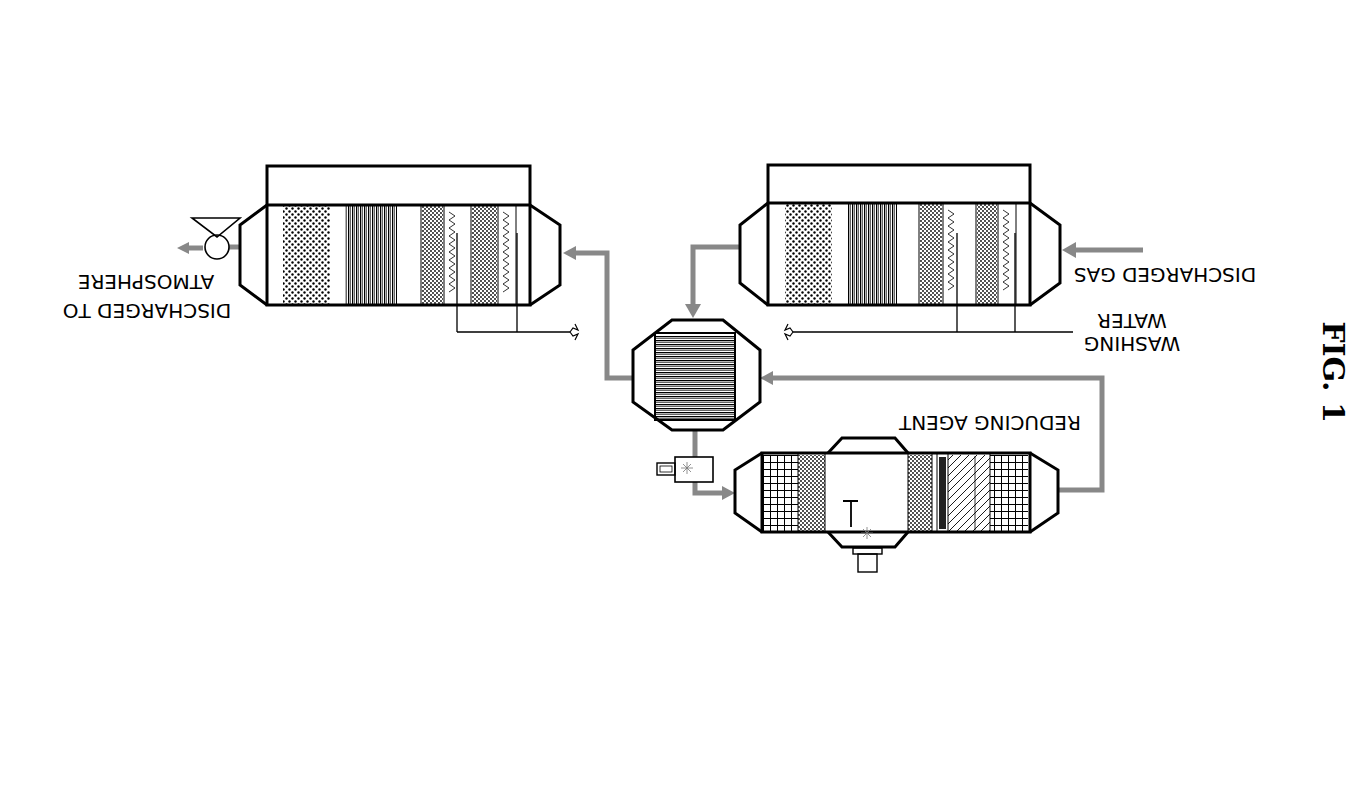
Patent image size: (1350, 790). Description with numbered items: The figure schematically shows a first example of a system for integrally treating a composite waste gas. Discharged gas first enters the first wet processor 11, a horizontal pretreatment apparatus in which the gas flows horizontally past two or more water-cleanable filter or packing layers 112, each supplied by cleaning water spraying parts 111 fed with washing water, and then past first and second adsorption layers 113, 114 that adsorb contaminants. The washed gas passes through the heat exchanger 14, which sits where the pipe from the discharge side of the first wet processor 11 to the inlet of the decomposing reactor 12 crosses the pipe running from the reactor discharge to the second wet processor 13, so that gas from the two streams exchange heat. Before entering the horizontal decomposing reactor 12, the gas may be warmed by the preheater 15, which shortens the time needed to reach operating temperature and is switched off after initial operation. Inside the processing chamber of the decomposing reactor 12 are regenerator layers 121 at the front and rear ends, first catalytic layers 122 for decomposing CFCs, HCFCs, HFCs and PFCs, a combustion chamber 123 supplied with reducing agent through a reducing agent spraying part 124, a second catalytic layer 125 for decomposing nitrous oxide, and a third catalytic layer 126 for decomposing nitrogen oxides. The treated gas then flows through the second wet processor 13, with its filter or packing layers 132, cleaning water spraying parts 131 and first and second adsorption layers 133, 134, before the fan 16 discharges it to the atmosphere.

The first wet processor 11 is at (860, 236).
The cleaning water spraying parts 111 is at (957, 285).
The filter or packing layers 112 is at (980, 222).
The first adsorption layer 113 is at (870, 222).
The second adsorption layer 114 is at (812, 220).
The decomposing reactor 12 is at (865, 543).
The regenerator layers 121 is at (777, 518).
The first catalytic layers 122 is at (810, 517).
The combustion chamber 123 is at (848, 505).
The reducing agent spraying part 124 is at (940, 548).
The second catalytic layer 125 is at (960, 517).
The third catalytic layer 126 is at (982, 517).
The second wet processor 13 is at (391, 268).
The cleaning water spraying parts 131 is at (457, 285).
The filter or packing layers 132 is at (478, 222).
The first adsorption layer 133 is at (375, 225).
The second adsorption layer 134 is at (305, 225).
The heat exchanger 14 is at (638, 418).
The preheater 15 is at (678, 495).
The fan 16 is at (197, 213).